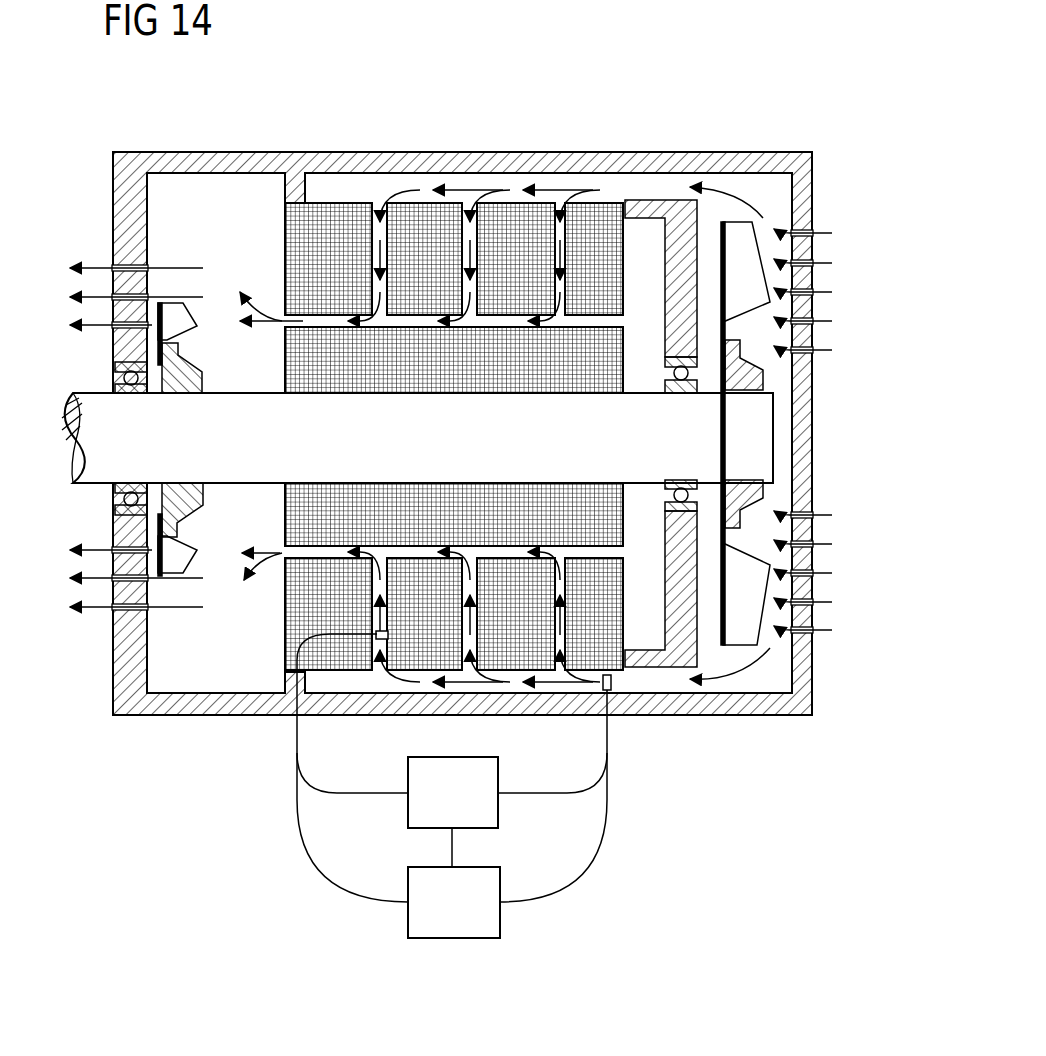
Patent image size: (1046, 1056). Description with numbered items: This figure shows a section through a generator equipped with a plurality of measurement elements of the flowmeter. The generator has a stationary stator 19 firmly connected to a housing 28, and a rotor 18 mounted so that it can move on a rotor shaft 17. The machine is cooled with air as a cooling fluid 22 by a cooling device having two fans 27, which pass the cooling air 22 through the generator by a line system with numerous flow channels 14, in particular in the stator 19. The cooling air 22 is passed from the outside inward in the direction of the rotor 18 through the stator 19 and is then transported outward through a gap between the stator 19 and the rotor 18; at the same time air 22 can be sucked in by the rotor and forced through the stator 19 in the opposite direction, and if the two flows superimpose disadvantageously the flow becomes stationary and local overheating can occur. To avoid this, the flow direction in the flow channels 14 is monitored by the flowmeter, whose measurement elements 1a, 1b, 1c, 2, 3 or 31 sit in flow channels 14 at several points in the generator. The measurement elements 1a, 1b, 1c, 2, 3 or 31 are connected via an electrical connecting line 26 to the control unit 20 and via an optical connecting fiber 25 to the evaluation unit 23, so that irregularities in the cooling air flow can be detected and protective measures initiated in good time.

The measurement element 1a is at (473, 694).
The measurement element 1b is at (493, 660).
The measurement element 1c is at (493, 660).
The measurement element 2 is at (493, 660).
The measurement element 3 is at (493, 660).
The measurement element 31 is at (603, 681).
The flow channel 14 is at (387, 230).
The rotor shaft 17 is at (107, 462).
The rotor 18 is at (598, 355).
The stator 19 is at (327, 222).
The control unit 20 is at (467, 808).
The cooling air 22 is at (92, 323).
The evaluation unit 23 is at (467, 918).
The optical connecting fiber 25 is at (337, 878).
The electrical connecting line 26 is at (337, 793).
The fan 27 is at (185, 313).
The housing 28 is at (746, 168).